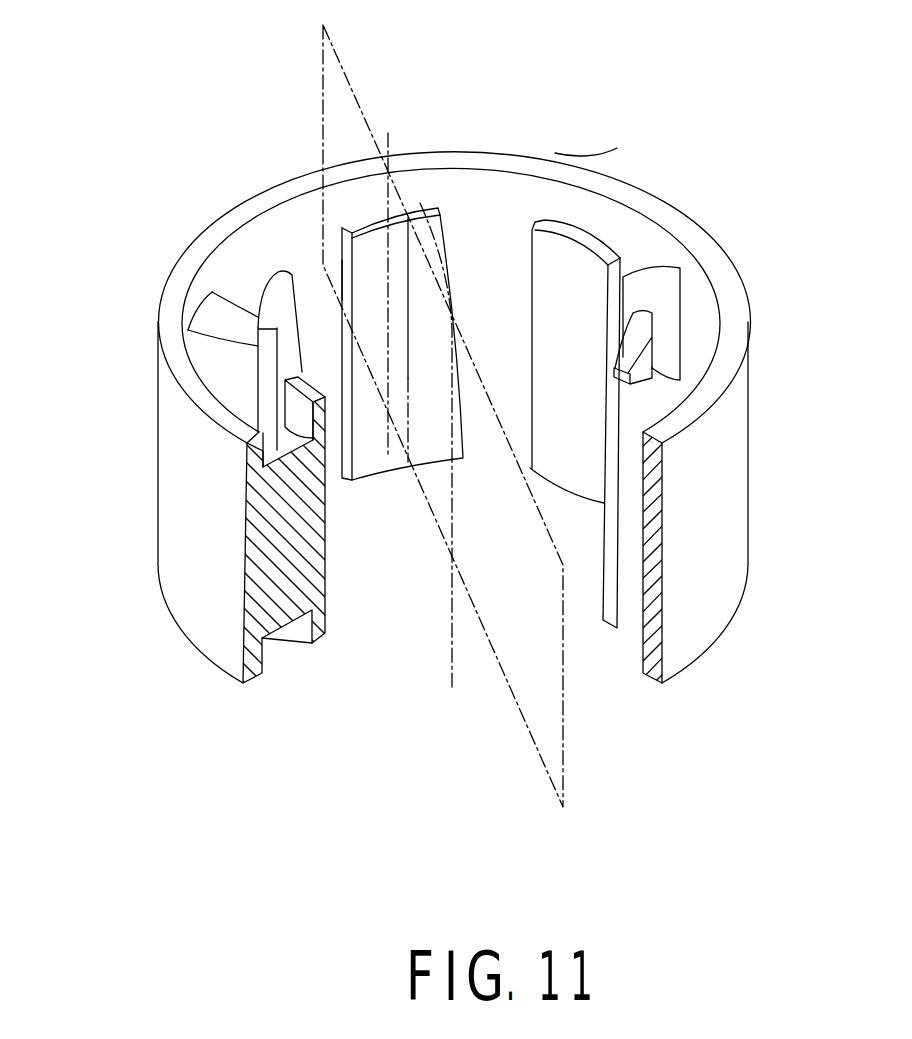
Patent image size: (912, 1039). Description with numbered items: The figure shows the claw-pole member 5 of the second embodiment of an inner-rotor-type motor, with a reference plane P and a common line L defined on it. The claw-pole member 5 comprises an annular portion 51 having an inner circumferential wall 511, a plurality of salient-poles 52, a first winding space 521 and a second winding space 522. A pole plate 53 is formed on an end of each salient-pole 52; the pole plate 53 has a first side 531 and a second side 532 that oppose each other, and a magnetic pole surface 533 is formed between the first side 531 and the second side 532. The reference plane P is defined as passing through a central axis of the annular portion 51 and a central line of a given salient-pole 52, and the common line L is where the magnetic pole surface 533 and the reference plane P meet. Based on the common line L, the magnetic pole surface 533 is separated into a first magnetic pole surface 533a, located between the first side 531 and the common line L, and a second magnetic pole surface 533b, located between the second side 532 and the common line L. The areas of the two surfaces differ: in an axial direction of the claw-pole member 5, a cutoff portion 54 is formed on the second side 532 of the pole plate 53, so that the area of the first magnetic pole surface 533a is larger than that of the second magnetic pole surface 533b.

The claw-pole member 5 is at (173, 639).
The annular portion 51 is at (714, 252).
The inner circumferential wall 511 is at (572, 203).
The salient-pole 52 is at (212, 292).
The first winding space 521 is at (223, 368).
The second winding space 522 is at (243, 260).
The pole plate 53 is at (385, 461).
The first side 531 is at (350, 257).
The second side 532 is at (432, 245).
The magnetic pole surface 533 is at (371, 622).
The first magnetic pole surface 533a is at (373, 455).
The second magnetic pole surface 533b is at (432, 454).
The cutoff portion 54 is at (590, 222).
The reference plane P is at (388, 133).
The common line L is at (442, 461).